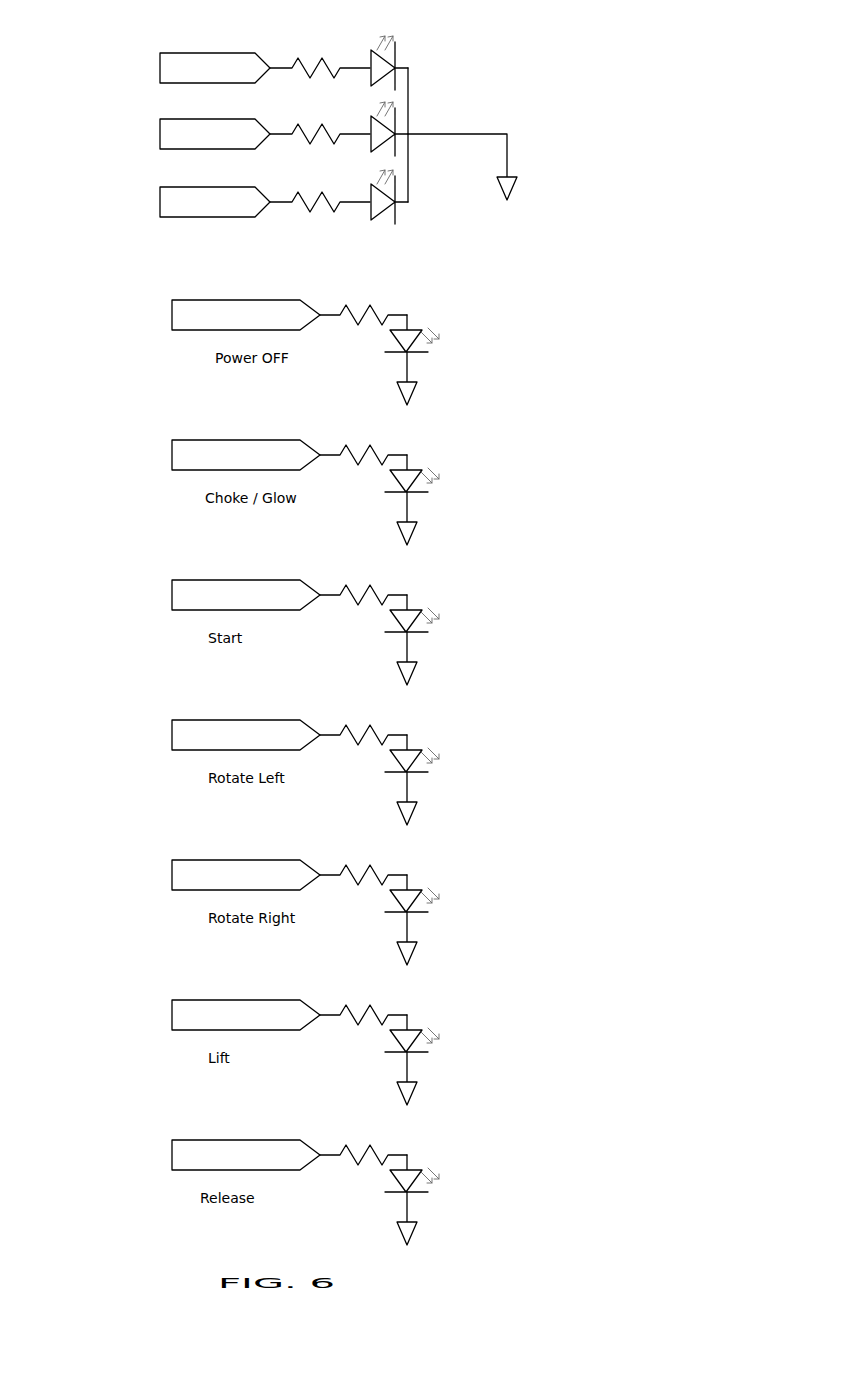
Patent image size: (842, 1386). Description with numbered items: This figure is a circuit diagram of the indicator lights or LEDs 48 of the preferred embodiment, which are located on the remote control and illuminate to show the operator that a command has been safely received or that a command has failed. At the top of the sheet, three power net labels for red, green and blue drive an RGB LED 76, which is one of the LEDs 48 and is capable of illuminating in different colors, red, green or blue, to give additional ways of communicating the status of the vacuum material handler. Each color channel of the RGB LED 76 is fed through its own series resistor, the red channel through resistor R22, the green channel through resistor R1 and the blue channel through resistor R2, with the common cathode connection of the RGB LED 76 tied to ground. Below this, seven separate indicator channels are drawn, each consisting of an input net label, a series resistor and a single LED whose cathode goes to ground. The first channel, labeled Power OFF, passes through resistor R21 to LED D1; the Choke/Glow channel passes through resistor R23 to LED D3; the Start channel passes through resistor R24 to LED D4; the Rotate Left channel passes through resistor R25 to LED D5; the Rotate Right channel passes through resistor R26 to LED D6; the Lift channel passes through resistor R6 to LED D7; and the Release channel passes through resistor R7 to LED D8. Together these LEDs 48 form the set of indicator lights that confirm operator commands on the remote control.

The LED 48 is at (130, 132).
The RGB LED 76 is at (410, 72).
The resistor R22 is at (320, 56).
The resistor R1 is at (320, 147).
The resistor R2 is at (320, 217).
The resistor R21 is at (362, 302).
The resistor R23 is at (362, 442).
The resistor R24 is at (362, 582).
The resistor R25 is at (362, 722).
The resistor R26 is at (362, 862).
The resistor R6 is at (363, 1002).
The resistor R7 is at (363, 1142).
The LED D1 is at (415, 360).
The LED D3 is at (415, 500).
The LED D4 is at (415, 640).
The LED D5 is at (415, 780).
The LED D6 is at (415, 920).
The LED D7 is at (415, 1060).
The LED D8 is at (415, 1200).